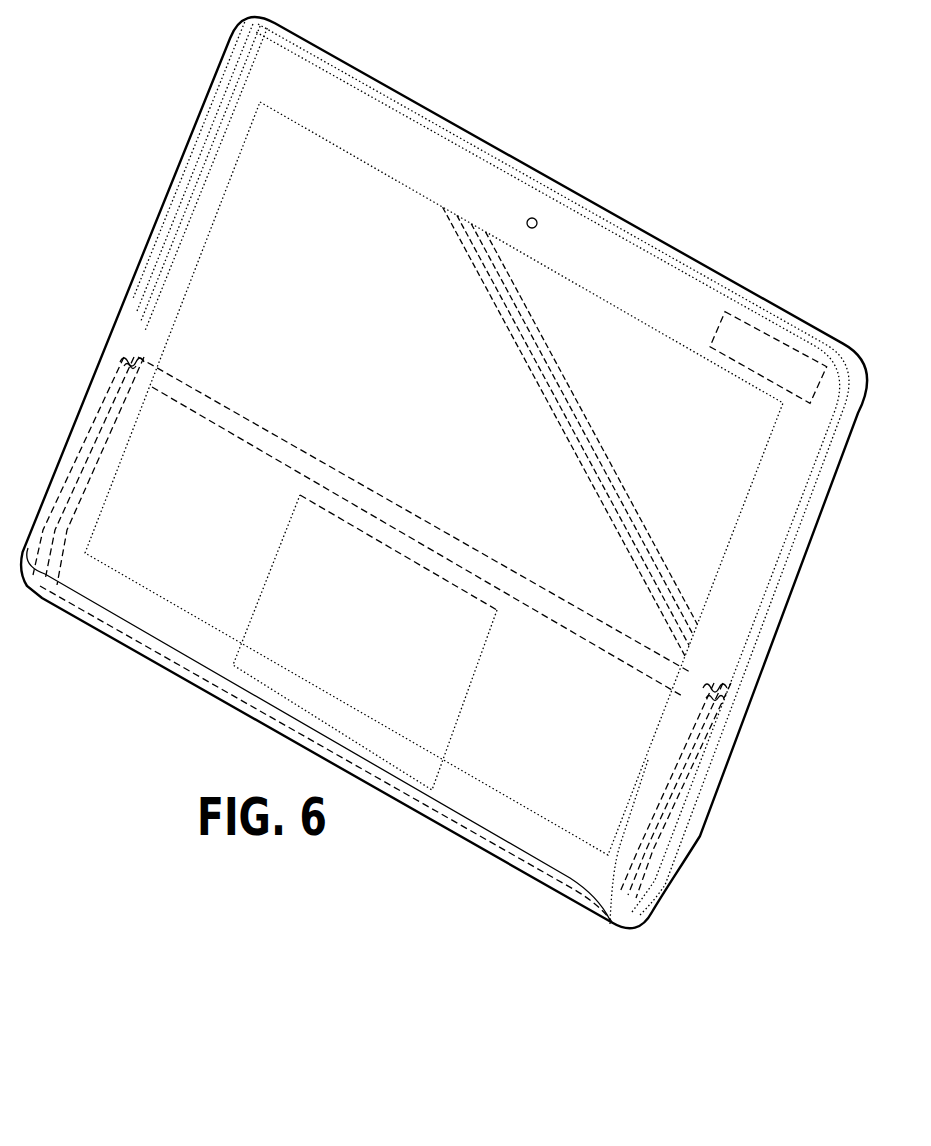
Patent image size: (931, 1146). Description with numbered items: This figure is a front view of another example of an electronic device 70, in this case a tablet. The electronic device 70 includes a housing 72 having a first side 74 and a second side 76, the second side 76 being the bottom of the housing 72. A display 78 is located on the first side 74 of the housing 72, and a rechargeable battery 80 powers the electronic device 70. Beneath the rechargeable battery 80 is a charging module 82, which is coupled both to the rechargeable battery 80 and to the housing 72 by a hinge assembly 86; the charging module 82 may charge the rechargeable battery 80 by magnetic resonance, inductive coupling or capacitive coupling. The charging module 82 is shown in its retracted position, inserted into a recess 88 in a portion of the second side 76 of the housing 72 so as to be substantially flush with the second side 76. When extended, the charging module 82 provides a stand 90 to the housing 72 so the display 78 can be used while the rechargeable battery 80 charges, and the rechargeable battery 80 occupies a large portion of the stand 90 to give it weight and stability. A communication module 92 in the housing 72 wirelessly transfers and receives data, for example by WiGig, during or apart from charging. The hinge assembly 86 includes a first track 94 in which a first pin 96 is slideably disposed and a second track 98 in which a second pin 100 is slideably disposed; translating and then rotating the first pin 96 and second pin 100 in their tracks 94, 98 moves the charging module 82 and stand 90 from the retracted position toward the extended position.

The electronic device 70 is at (444, 500).
The housing 72 is at (455, 124).
The first side 74 is at (173, 247).
The second side 76 is at (607, 922).
The display 78 is at (470, 401).
The rechargeable battery 80 is at (282, 462).
The charging module 82 is at (470, 702).
The hinge assembly 86 is at (713, 677).
The recess 88 is at (710, 755).
The stand 90 is at (430, 518).
The communication module 92 is at (778, 338).
The first track 94 is at (700, 797).
The first pin 96 is at (733, 708).
The second track 98 is at (80, 450).
The second pin 100 is at (122, 358).